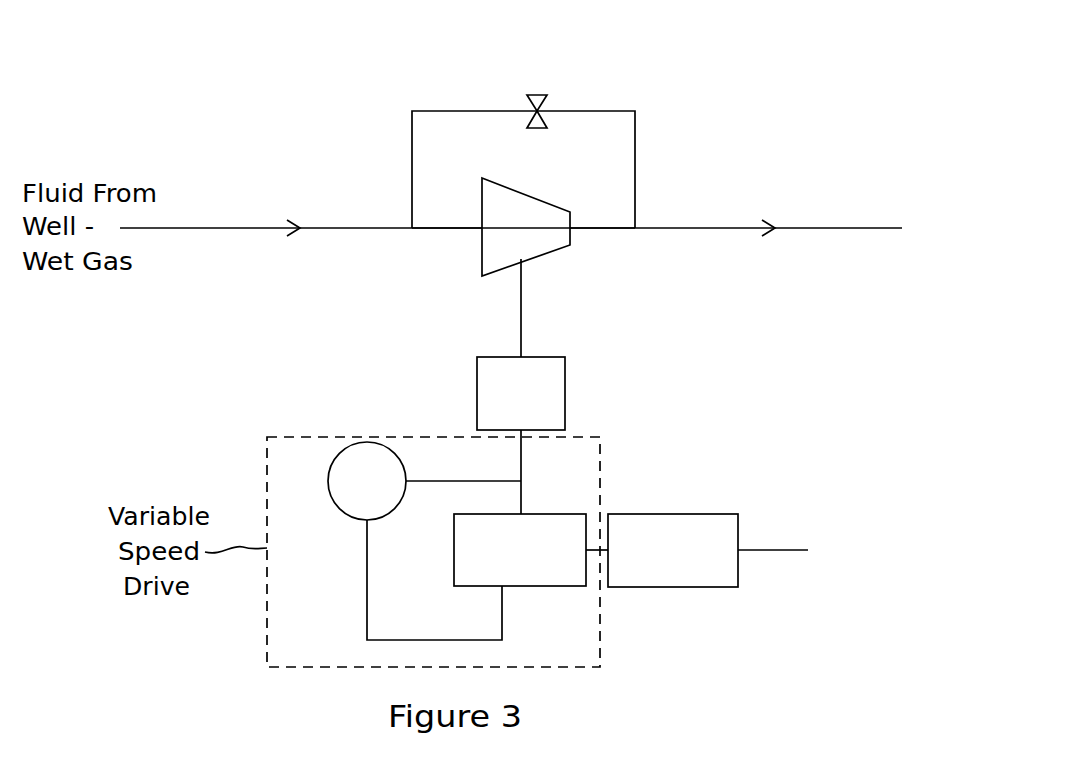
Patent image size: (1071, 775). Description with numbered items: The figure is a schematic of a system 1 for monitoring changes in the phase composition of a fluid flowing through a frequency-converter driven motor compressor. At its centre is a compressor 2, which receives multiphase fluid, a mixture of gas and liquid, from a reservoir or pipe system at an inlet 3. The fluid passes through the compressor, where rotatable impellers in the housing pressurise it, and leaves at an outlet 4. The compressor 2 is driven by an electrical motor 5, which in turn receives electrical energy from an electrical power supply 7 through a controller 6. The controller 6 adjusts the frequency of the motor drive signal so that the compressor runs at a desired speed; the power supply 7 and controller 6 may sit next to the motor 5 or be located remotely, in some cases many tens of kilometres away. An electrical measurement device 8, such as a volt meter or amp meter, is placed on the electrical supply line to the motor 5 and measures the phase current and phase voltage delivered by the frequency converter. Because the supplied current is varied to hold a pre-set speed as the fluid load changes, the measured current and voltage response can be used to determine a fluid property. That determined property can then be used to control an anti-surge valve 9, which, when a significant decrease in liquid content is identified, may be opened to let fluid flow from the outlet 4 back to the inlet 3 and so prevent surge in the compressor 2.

The wet gas compression system 1 is at (704, 47).
The compressor 2 is at (526, 267).
The inlet 3 is at (432, 230).
The outlet 4 is at (618, 230).
The electrical motor 5 is at (565, 393).
The controller 6 is at (538, 513).
The electrical power supply 7 is at (672, 514).
The electrical measurement device 8 is at (339, 454).
The anti-surge valve 9 is at (535, 95).